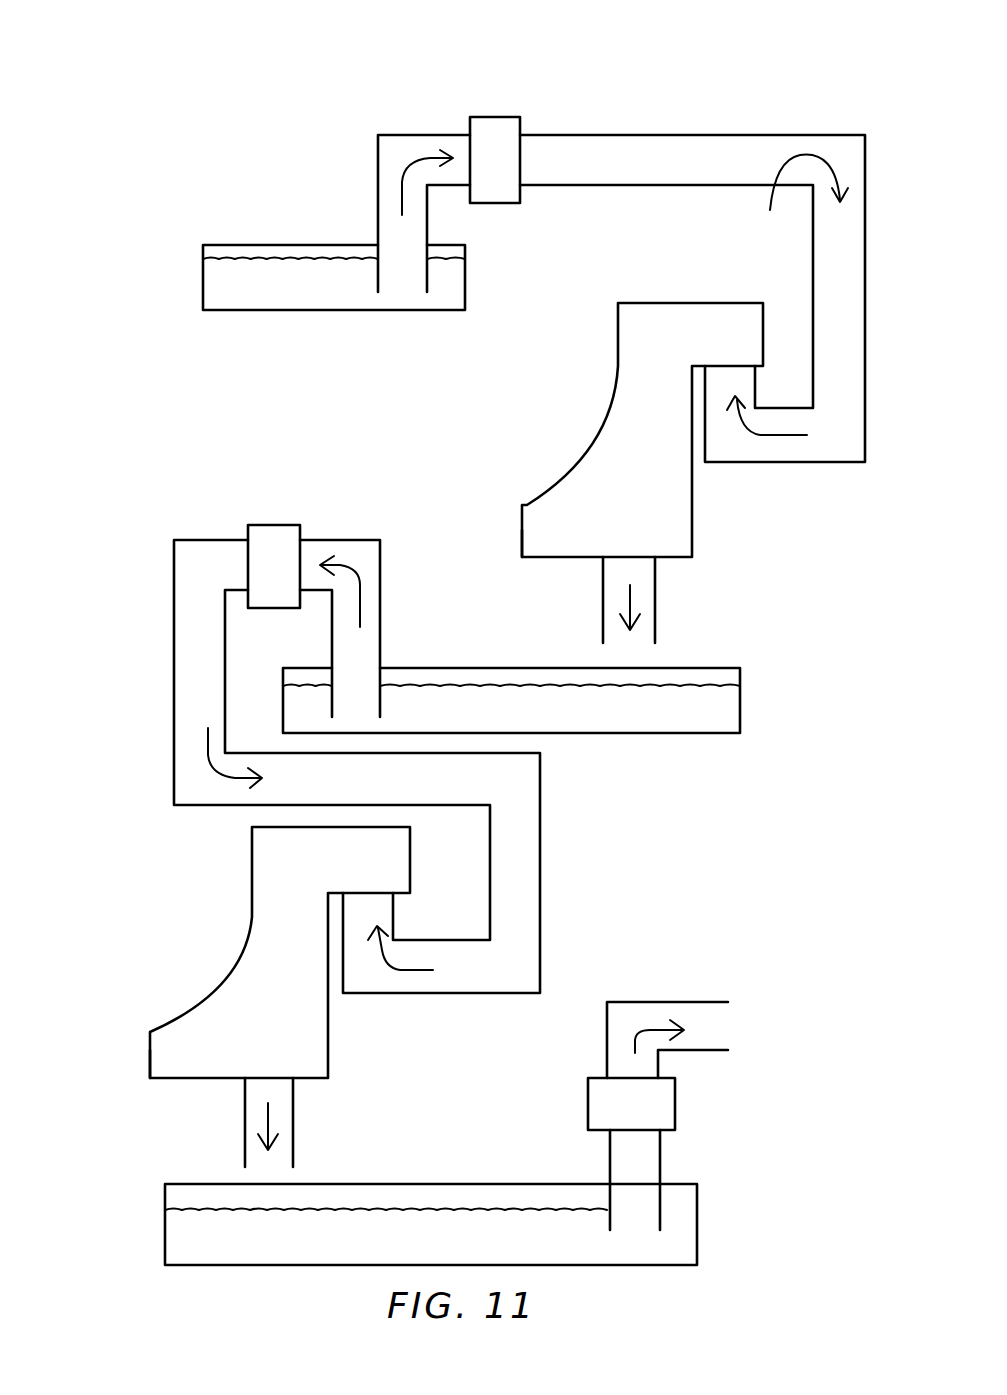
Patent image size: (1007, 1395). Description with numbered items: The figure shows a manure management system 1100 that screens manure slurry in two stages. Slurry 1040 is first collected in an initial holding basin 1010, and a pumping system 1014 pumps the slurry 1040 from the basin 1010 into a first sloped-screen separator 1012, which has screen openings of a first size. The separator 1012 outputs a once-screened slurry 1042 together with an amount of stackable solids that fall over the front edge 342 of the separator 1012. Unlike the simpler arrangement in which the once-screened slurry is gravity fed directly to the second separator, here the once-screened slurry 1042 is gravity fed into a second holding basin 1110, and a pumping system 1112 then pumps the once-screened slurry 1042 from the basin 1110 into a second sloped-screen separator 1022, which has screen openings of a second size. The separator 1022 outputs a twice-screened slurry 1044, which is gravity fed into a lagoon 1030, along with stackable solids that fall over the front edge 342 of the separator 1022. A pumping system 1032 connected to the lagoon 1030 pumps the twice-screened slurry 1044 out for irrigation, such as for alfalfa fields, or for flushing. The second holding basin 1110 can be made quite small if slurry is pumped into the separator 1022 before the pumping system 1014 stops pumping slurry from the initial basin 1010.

The front edge 342 is at (522, 535).
The initial holding basin 1010 is at (280, 295).
The first sloped-screen separator 1012 is at (586, 455).
The pumping system 1014 is at (511, 96).
The second sloped-screen separator 1022 is at (228, 972).
The lagoon 1030 is at (685, 1223).
The pumping system 1032 is at (690, 1104).
The slurry 1040 is at (244, 230).
The once-screened slurry 1042 is at (632, 592).
The twice-screened slurry 1044 is at (268, 1112).
The manure management system 1100 is at (768, 92).
The second holding basin 1110 is at (723, 718).
The pumping system 1112 is at (281, 507).